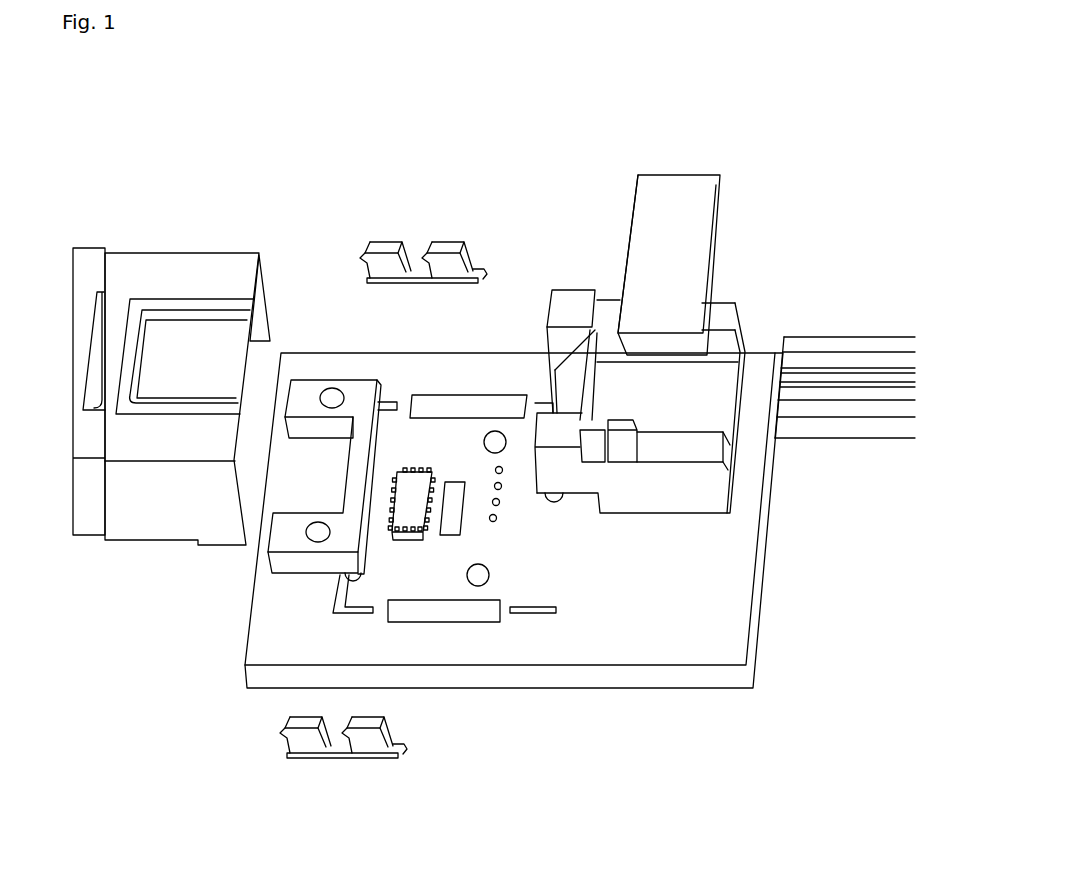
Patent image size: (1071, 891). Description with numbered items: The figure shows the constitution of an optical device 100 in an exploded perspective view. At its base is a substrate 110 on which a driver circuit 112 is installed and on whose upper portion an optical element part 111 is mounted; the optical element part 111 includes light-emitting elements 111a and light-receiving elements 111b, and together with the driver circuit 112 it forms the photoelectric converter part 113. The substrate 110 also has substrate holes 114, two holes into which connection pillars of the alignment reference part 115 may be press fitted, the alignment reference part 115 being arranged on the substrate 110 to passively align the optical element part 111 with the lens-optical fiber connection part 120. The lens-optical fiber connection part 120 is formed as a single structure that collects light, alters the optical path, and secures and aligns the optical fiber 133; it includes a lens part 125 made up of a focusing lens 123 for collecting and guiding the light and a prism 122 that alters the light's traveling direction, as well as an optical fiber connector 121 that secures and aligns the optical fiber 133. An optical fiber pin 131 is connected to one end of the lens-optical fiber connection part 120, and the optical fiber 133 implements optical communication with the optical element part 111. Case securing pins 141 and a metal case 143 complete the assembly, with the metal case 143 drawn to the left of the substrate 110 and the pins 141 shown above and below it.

The optical device 100 is at (850, 125).
The substrate 110 is at (737, 615).
The optical element part 111 is at (570, 514).
The light-emitting element 111a is at (501, 488).
The light-receiving element 111b is at (496, 520).
The driver circuit 112 is at (430, 543).
The photoelectric converter part 113 is at (551, 538).
The substrate hole 114 is at (489, 575).
The alignment reference part 115 is at (343, 383).
The lens-optical fiber connection part 120 is at (733, 443).
The optical fiber connector 121 is at (680, 417).
The prism 122 is at (597, 370).
The focusing lens 123 is at (572, 387).
The lens part 125 is at (502, 351).
The optical fiber pin 131 is at (705, 203).
The optical fiber 133 is at (843, 430).
The case securing pin 141 is at (387, 735).
The metal case 143 is at (212, 523).